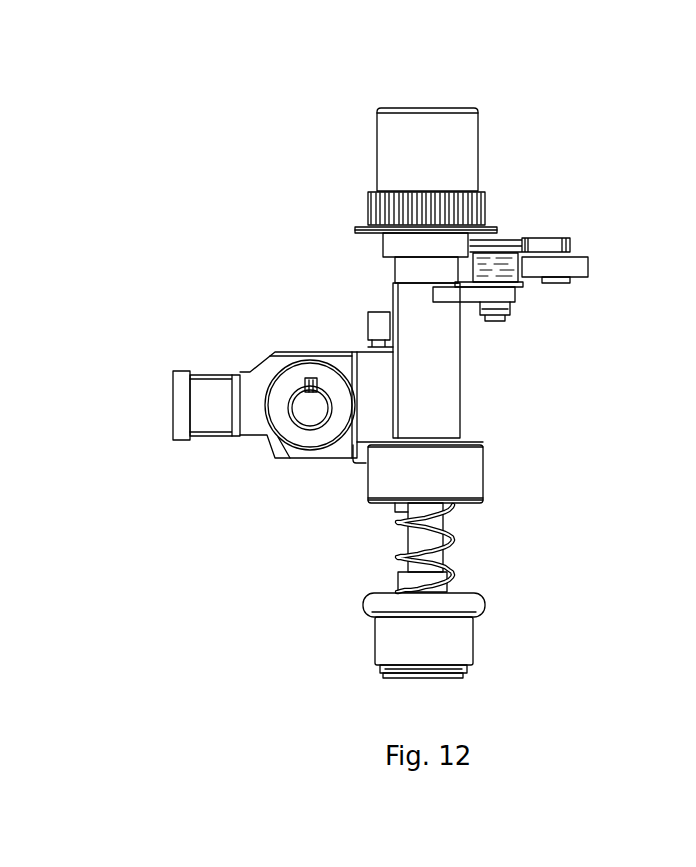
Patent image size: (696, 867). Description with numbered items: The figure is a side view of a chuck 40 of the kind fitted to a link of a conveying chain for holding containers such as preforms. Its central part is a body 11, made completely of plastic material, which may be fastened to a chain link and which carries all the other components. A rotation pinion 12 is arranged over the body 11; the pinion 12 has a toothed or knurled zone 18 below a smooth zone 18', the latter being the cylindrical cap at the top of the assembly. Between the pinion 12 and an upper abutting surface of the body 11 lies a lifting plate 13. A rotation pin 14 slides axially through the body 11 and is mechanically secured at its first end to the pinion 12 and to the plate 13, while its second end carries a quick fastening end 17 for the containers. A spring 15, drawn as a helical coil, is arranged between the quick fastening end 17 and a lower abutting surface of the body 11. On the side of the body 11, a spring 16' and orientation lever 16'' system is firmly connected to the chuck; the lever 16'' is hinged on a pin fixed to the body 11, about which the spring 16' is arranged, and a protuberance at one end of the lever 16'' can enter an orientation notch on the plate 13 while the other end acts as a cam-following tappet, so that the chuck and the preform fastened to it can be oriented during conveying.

The chuck 40 is at (528, 138).
The rotation pinion 12 is at (374, 116).
The smooth zone 18' is at (370, 149).
The toothed or knurled zone 18 is at (461, 211).
The lifting plate 13 is at (397, 242).
The orientation lever 16'' is at (578, 221).
The spring 16' is at (528, 313).
The body 11 is at (260, 387).
The rotation pin 14 is at (415, 532).
The spring 15 is at (453, 543).
The quick fastening end 17 is at (393, 648).